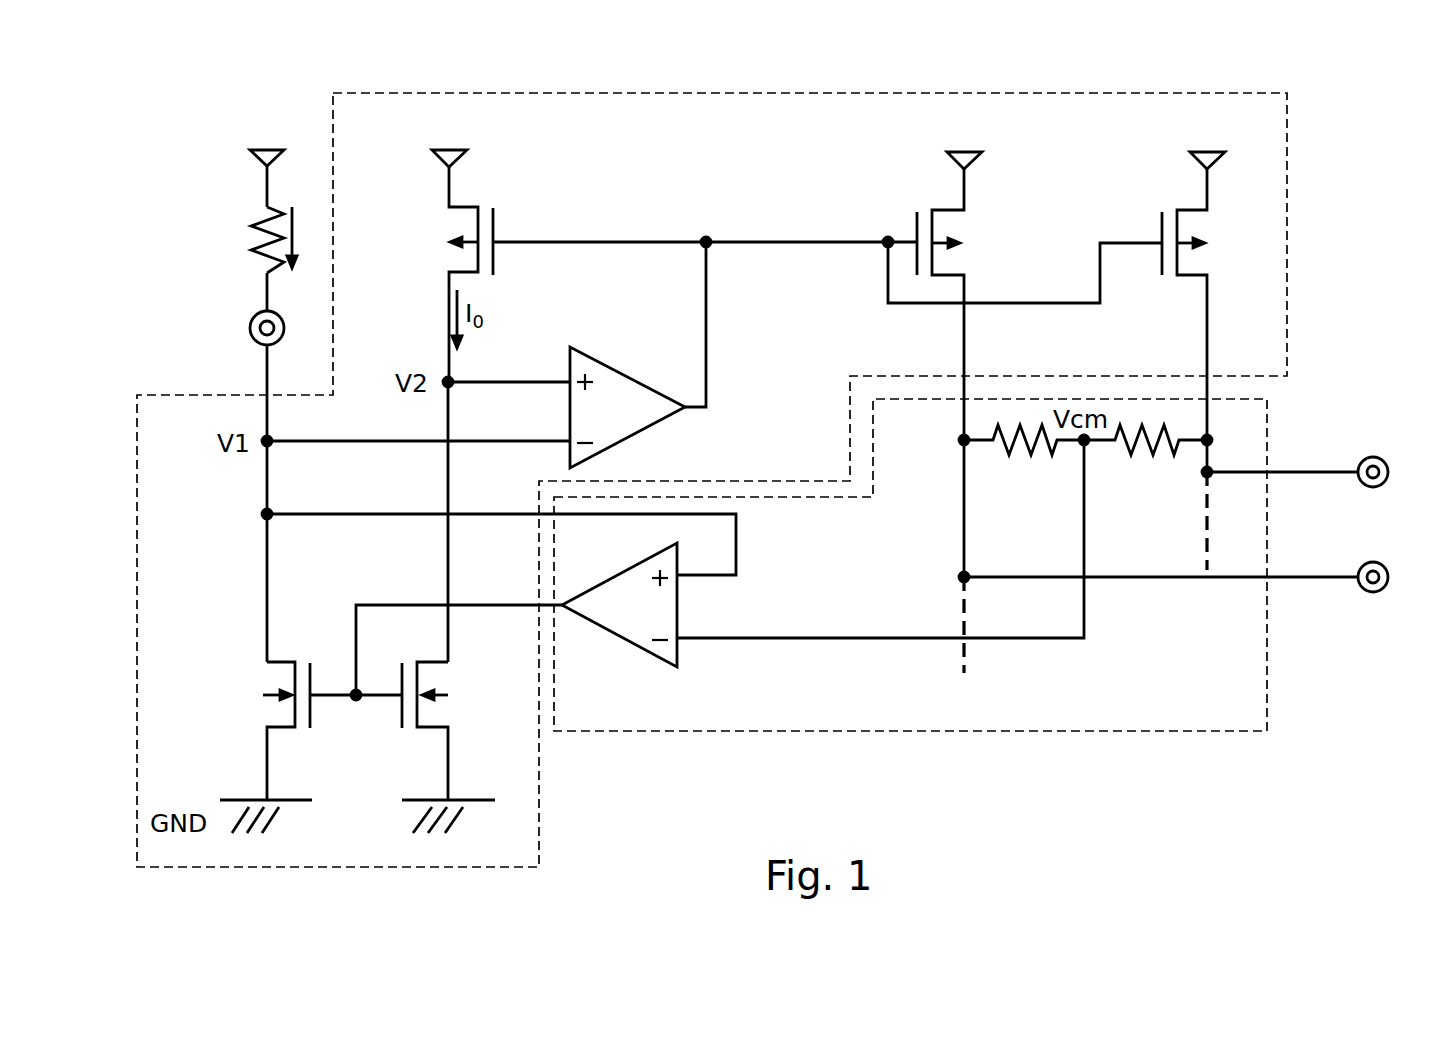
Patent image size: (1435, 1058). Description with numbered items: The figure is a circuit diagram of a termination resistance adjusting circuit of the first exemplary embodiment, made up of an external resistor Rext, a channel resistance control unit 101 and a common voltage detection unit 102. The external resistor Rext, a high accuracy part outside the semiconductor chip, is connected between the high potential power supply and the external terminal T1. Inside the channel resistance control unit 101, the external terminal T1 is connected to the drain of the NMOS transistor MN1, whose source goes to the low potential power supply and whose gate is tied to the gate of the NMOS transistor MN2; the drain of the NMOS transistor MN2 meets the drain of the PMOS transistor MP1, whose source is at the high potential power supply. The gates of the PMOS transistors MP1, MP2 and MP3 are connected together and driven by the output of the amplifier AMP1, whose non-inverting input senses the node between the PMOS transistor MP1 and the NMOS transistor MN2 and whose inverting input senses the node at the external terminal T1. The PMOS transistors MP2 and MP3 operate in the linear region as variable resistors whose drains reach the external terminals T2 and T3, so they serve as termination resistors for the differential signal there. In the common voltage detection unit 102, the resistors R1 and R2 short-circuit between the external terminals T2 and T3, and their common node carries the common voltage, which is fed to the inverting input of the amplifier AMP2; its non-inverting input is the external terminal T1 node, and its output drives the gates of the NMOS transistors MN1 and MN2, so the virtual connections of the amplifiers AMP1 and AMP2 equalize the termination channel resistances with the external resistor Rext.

The channel resistance control unit 101 is at (772, 95).
The common voltage detection unit 102 is at (1272, 413).
The external resistor Rext is at (254, 244).
The external terminal T1 is at (245, 328).
The external terminal T2 is at (1195, 617).
The external terminal T3 is at (1316, 513).
The PMOS transistor MP1 is at (646, 266).
The PMOS transistor MP2 is at (1025, 296).
The PMOS transistor MP3 is at (1216, 312).
The NMOS transistor MN1 is at (275, 747).
The NMOS transistor MN2 is at (436, 747).
The amplifier AMP1 is at (573, 350).
The amplifier AMP2 is at (660, 663).
The resistor R1 is at (1024, 460).
The resistor R2 is at (1145, 460).